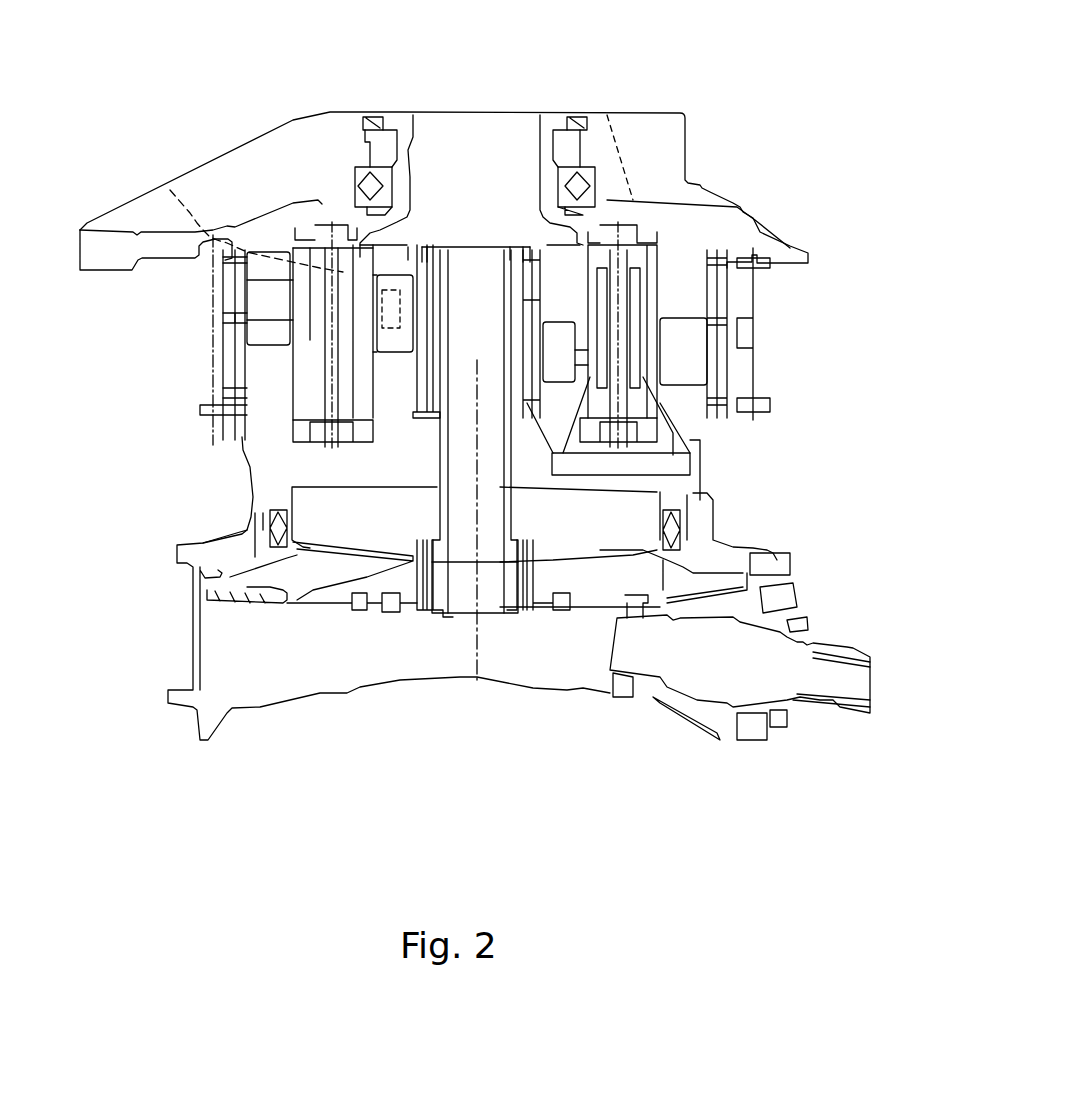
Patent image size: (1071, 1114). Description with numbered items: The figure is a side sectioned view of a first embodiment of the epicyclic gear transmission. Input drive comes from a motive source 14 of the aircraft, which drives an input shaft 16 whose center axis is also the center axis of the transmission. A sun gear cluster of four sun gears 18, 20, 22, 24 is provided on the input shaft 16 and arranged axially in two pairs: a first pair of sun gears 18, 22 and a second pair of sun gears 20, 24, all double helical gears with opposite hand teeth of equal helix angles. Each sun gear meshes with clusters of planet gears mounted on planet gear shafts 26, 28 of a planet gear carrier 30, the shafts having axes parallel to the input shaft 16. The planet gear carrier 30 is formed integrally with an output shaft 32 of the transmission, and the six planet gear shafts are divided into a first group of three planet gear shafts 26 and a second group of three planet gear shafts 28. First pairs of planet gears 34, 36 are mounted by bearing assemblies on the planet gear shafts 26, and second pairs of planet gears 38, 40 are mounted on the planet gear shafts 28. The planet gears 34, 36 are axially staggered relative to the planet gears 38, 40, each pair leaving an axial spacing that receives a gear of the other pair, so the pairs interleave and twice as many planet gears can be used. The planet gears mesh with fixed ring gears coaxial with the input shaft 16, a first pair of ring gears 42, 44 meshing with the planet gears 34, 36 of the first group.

The motive source 14 is at (656, 735).
The input shaft 16 is at (447, 480).
The sun gear 18 is at (420, 403).
The sun gear 20 is at (527, 358).
The sun gear 22 is at (427, 317).
The sun gear 24 is at (533, 268).
The planet gear shaft 26 is at (647, 275).
The planet gear shaft 28 is at (303, 390).
The planet gear carrier 30 is at (360, 213).
The output shaft 32 is at (388, 125).
The planet gear 34 is at (700, 412).
The planet gear 36 is at (777, 333).
The planet gear 38 is at (242, 380).
The planet gear 40 is at (242, 297).
The ring gear 42 is at (233, 397).
The ring gear 44 is at (233, 322).